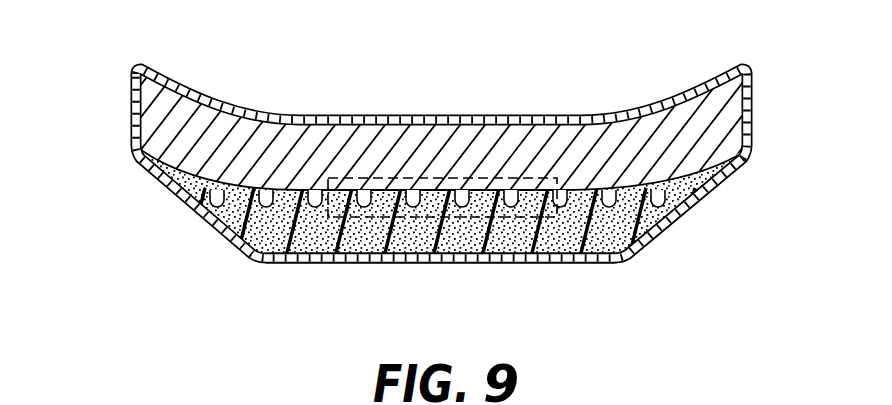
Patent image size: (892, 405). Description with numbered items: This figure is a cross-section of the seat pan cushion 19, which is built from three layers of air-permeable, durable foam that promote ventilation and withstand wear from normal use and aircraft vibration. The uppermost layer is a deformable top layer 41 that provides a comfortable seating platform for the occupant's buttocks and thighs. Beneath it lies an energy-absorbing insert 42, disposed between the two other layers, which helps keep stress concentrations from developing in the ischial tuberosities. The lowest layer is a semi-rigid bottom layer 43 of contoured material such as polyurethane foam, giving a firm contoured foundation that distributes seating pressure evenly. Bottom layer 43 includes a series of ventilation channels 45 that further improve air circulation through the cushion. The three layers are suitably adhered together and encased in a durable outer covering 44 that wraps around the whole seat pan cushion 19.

The seat pan cushion 19 is at (442, 180).
The deformable top layer 41 is at (708, 128).
The energy-absorbing insert 42 is at (330, 262).
The semi-rigid bottom layer 43 is at (527, 250).
The outer covering 44 is at (133, 121).
The ventilation channels 45 is at (657, 225).